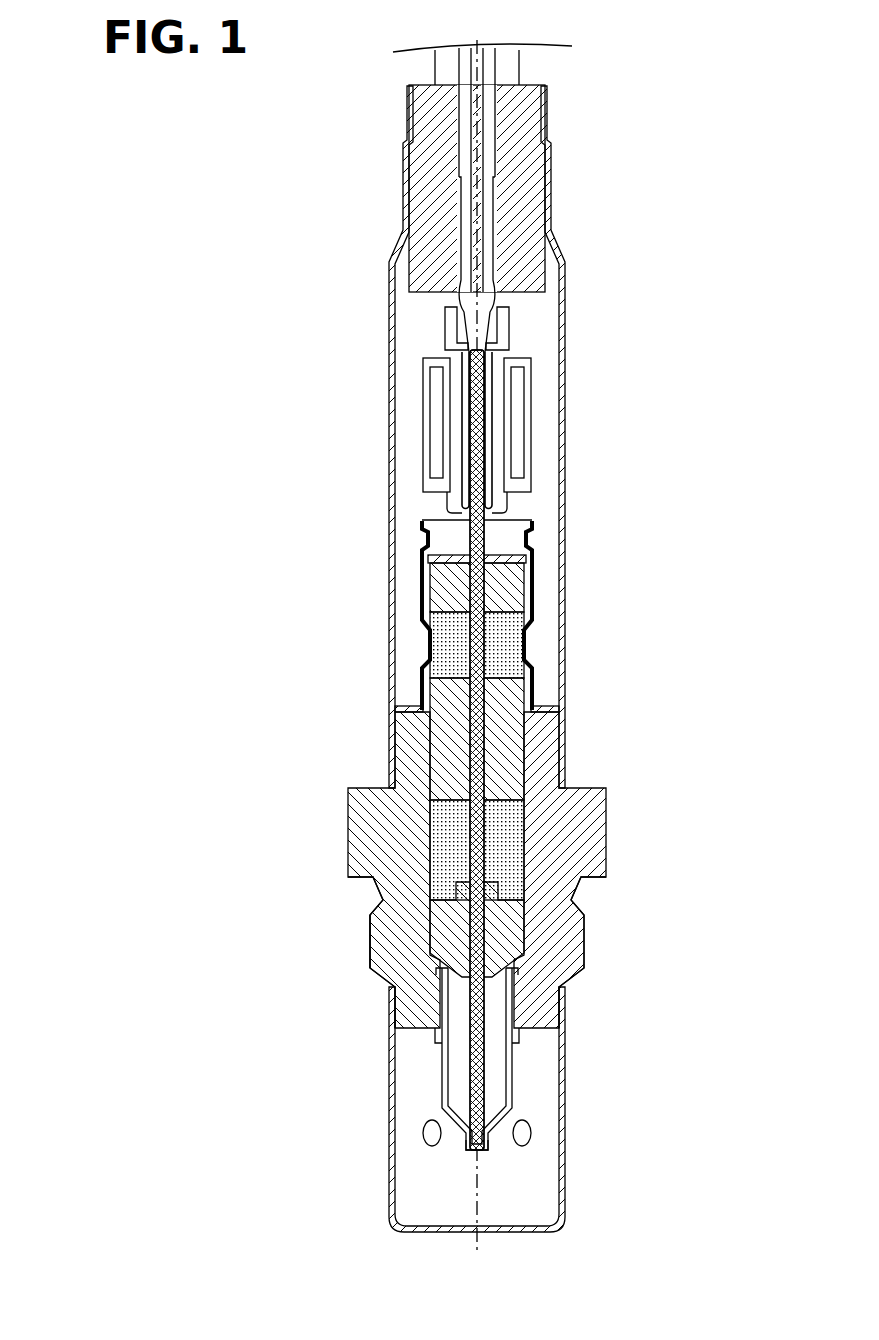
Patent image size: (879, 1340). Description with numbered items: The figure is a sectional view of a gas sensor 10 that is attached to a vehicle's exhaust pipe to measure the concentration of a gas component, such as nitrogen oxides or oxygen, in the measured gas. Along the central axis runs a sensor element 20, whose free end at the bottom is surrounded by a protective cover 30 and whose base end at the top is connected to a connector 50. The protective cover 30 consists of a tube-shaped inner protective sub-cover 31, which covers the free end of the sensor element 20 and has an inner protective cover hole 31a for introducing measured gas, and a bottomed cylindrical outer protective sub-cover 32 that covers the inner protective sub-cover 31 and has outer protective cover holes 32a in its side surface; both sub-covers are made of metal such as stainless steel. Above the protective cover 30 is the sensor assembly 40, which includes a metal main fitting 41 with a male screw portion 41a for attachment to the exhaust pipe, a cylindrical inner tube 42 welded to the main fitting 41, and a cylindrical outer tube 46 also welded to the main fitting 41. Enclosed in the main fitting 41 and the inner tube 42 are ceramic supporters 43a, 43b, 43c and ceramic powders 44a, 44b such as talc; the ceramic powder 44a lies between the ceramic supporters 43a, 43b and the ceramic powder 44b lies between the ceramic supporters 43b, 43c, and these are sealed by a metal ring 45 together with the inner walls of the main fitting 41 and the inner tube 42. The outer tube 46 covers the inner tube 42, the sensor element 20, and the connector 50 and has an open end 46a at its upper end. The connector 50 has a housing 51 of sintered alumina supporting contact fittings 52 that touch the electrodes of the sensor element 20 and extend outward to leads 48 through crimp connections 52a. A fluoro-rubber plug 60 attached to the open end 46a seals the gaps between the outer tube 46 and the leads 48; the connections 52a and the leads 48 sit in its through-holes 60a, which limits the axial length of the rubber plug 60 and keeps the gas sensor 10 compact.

The gas sensor 10 is at (662, 98).
The sensor element 20 is at (487, 837).
The protective cover 30 is at (484, 1100).
The inner protective sub-cover 31 is at (443, 1062).
The inner protective cover hole 31a is at (477, 1155).
The outer protective sub-cover 32 is at (390, 1097).
The outer protective cover holes 32a is at (422, 1130).
The sensor assembly 40 is at (485, 747).
The main fitting 41 is at (410, 987).
The male screw portion 41a is at (372, 960).
The inner tube 42 is at (426, 540).
The ceramic supporter 43a is at (447, 925).
The ceramic supporter 43b is at (445, 752).
The ceramic supporter 43c is at (452, 598).
The ceramic powder 44a is at (445, 850).
The ceramic powder 44b is at (442, 652).
The metal ring 45 is at (430, 556).
The outer tube 46 is at (390, 498).
The open end 46a is at (415, 71).
The leads 48 is at (465, 118).
The connector 50 is at (455, 410).
The housing 51 is at (422, 390).
The contact fittings 52 is at (468, 420).
The connections 52a is at (468, 190).
The rubber plug 60 is at (520, 167).
The through-holes 60a is at (463, 267).